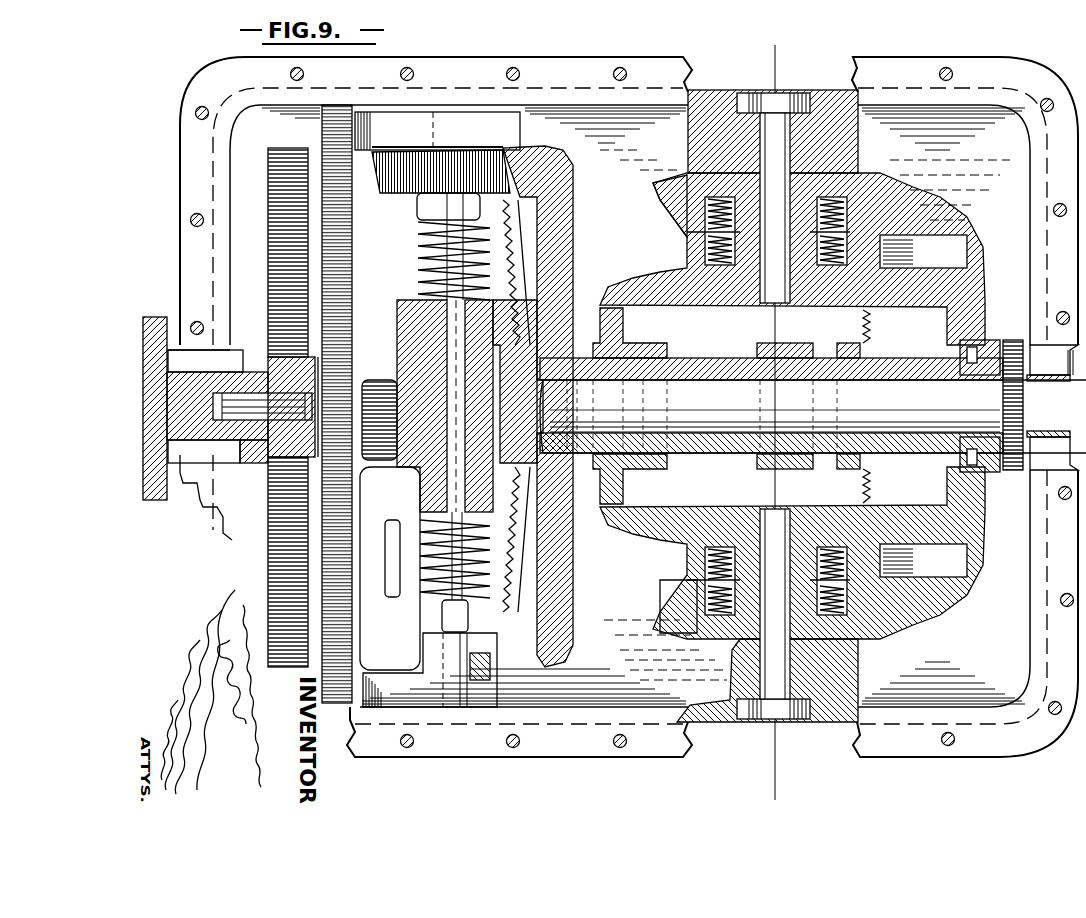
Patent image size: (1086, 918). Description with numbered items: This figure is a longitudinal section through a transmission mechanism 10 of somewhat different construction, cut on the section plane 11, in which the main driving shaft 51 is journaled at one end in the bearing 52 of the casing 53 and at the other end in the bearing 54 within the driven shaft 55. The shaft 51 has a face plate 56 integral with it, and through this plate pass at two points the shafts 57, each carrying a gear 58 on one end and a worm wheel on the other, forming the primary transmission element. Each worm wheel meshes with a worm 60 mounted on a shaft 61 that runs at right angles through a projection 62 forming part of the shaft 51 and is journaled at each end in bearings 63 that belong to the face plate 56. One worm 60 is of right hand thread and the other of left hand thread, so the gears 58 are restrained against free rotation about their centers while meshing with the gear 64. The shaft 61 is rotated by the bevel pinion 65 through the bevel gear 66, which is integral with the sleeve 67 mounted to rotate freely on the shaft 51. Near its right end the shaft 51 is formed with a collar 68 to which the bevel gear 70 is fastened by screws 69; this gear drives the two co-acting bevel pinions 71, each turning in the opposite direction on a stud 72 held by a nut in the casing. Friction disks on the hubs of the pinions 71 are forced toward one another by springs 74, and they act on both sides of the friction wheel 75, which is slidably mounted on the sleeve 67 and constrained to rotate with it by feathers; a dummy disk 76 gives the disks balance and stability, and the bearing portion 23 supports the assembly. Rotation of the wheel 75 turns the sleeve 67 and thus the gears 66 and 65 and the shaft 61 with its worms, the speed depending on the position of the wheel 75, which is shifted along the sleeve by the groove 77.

The housing 10 is at (240, 158).
The section line 11 is at (768, 50).
The clutch body 23 is at (643, 290).
The main driving shaft 51 is at (813, 405).
The bearing 52 is at (1038, 378).
The casing 53 is at (1047, 523).
The bearing 54 is at (238, 405).
The driven shaft 55 is at (178, 340).
The face plate 56 is at (337, 404).
The shafts 57 is at (232, 235).
The gear 58 is at (288, 160).
The worm 60 is at (486, 253).
The shaft 61 is at (450, 357).
The projection 62 is at (470, 340).
The bearings 63 is at (412, 120).
The gear 64 is at (318, 358).
The bevel pinion 65 is at (502, 150).
The bevel gear 66 is at (552, 237).
The sleeve 67 is at (715, 447).
The collar 68 is at (1040, 456).
The screws 69 is at (987, 338).
The bevel gear 70 is at (974, 235).
The bevel pinions 71 is at (687, 185).
The stud 72 is at (768, 138).
The springs 74 is at (713, 600).
The friction wheel 75 is at (935, 500).
The dummy disk 76 is at (622, 323).
The groove 77 is at (830, 466).